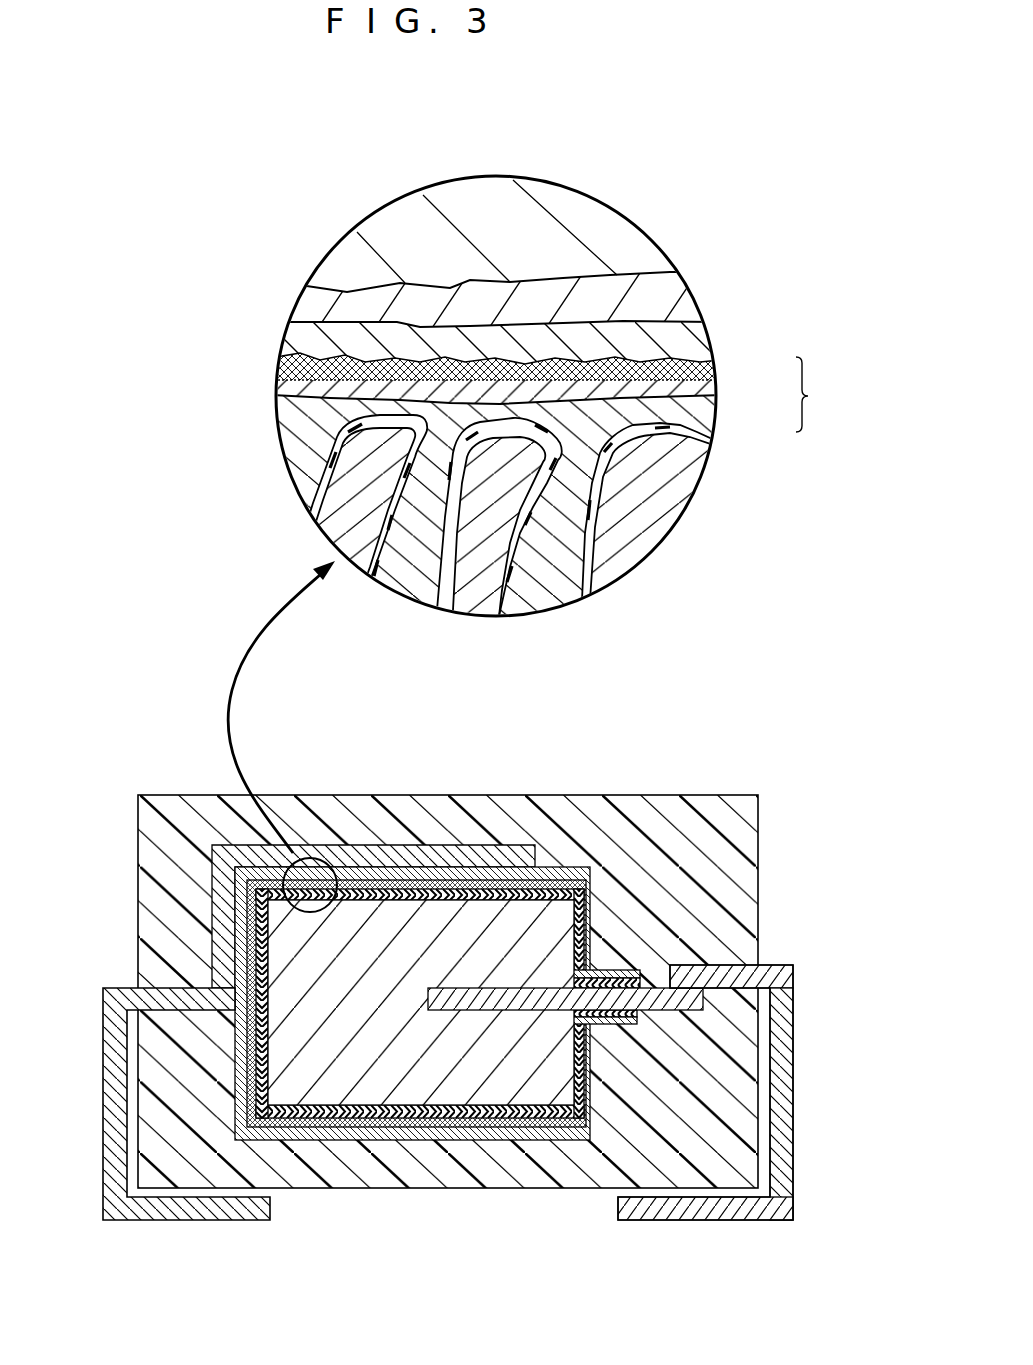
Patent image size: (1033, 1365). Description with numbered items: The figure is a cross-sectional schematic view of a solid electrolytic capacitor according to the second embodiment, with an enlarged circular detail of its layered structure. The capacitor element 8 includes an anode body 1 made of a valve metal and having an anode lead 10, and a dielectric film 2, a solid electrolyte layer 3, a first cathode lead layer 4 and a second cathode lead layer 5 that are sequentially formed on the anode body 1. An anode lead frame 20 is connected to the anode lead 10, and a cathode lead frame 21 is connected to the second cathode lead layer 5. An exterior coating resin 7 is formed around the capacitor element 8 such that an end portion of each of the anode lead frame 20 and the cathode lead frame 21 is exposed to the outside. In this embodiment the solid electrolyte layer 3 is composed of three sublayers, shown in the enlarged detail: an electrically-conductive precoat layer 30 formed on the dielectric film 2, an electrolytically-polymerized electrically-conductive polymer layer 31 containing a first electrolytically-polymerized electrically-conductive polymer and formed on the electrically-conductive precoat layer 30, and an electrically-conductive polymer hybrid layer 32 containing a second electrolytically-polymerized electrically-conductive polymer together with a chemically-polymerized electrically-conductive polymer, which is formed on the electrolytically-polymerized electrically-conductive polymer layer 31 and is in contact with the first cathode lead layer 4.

The anode body 1 is at (330, 922).
The dielectric film 2 is at (363, 898).
The solid electrolyte layer 3 is at (540, 740).
The electrically-conductive precoat layer 30 is at (693, 411).
The electrolytically-polymerized electrically-conductive polymer layer 31 is at (690, 394).
The electrically-conductive polymer hybrid layer 32 is at (715, 366).
The first cathode lead layer 4 is at (453, 877).
The second cathode lead layer 5 is at (495, 868).
The exterior coating resin 7 is at (157, 900).
The capacitor element 8 is at (313, 735).
The anode lead 10 is at (658, 995).
The anode lead frame 20 is at (782, 1107).
The cathode lead frame 21 is at (117, 1118).